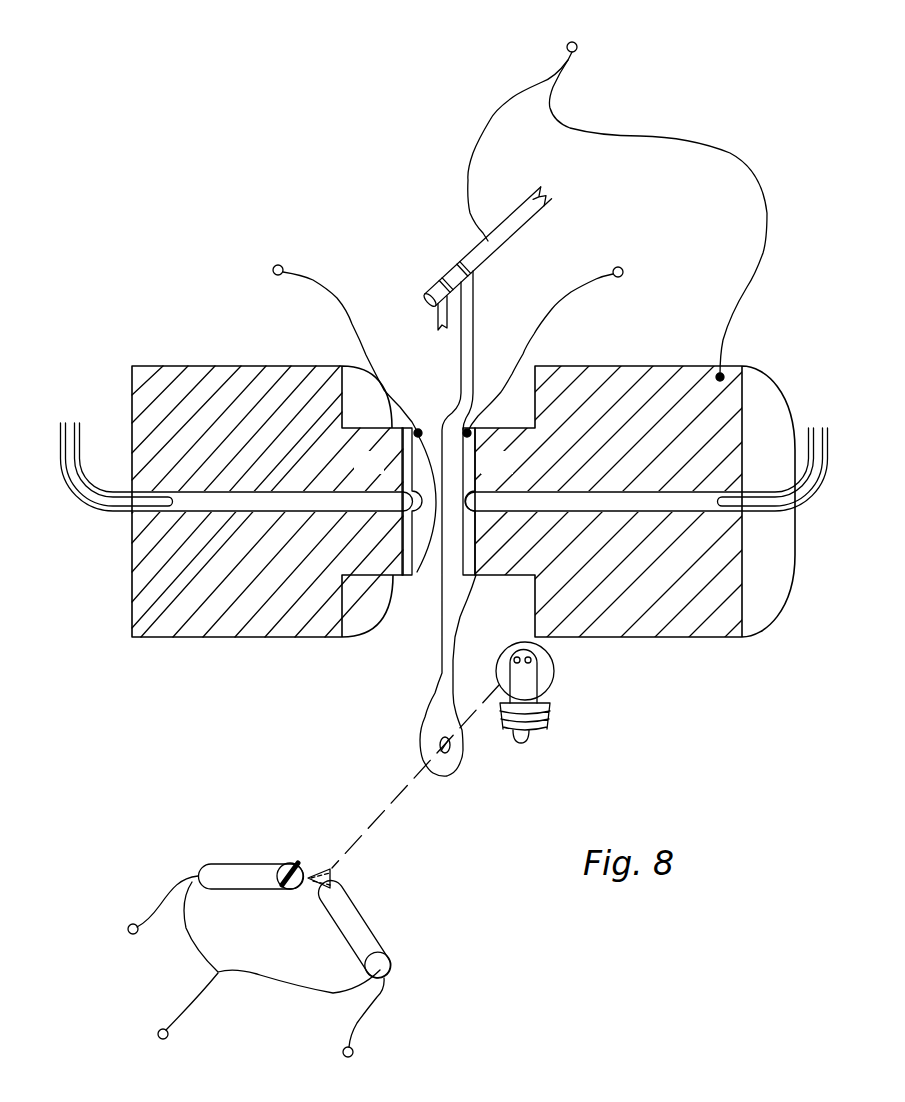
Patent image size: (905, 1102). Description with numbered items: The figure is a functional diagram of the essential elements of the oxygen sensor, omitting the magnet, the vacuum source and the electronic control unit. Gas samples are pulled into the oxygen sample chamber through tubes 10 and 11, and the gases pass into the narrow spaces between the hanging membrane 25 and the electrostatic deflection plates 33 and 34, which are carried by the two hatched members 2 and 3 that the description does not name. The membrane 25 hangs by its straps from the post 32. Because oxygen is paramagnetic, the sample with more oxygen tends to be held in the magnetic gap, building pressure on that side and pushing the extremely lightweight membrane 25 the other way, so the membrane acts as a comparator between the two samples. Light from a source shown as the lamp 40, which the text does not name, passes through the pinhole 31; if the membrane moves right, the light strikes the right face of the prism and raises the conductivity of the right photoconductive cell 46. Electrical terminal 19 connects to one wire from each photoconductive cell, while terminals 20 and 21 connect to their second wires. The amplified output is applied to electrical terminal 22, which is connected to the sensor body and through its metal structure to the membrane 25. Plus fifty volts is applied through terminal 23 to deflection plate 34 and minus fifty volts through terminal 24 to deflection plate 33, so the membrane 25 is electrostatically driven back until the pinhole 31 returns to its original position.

The left electrode block 2 is at (238, 613).
The right electrode block 3 is at (768, 590).
The tube 10 is at (80, 467).
The tube 11 is at (803, 478).
The electrical terminal 19 is at (260, 976).
The electrical terminal 20 is at (149, 924).
The electrical terminal 21 is at (360, 1033).
The electrical terminal 22 is at (617, 194).
The electrical terminal 23 is at (566, 338).
The electrical terminal 24 is at (324, 337).
The membrane 25 is at (450, 588).
The pinhole 31 is at (450, 747).
The post 32 is at (452, 277).
The electrostatic deflection plate 33 is at (420, 462).
The electrostatic deflection plate 34 is at (468, 463).
The lamp 40 is at (547, 677).
The photoconductive cell 46 is at (257, 872).